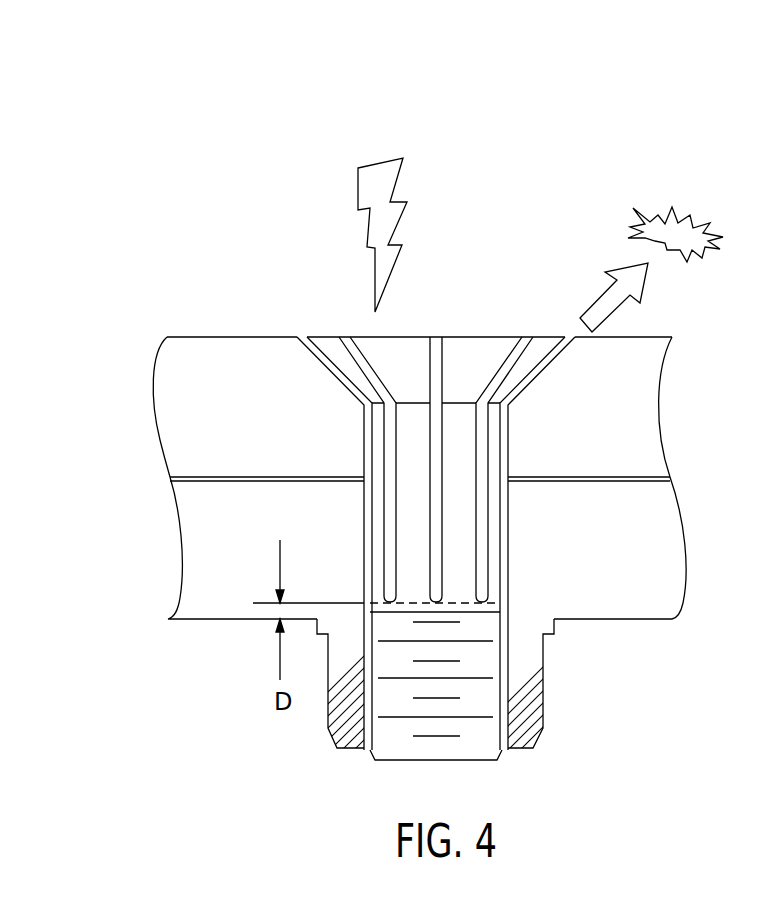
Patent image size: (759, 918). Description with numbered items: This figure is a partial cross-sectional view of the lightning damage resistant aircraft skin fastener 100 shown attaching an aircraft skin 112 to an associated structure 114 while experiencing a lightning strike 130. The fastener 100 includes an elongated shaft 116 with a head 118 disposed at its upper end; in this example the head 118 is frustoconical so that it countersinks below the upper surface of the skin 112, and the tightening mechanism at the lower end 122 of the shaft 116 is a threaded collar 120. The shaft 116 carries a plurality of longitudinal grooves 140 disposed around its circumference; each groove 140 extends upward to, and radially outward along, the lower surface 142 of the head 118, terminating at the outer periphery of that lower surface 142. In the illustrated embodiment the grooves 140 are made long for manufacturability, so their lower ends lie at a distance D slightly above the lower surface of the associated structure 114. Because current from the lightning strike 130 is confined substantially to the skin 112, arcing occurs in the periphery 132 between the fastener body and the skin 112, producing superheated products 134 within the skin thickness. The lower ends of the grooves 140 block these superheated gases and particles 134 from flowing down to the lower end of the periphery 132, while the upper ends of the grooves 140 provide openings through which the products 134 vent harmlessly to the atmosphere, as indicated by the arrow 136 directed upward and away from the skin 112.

The lightning damage resistant aircraft skin fastener 100 is at (600, 178).
The aircraft skin 112 is at (650, 395).
The associated structure 114 is at (670, 557).
The elongated shaft 116 is at (375, 452).
The head 118 is at (305, 337).
The threaded collar 120 is at (533, 675).
The lower end of the shaft 122 is at (487, 730).
The lightning strike 130 is at (358, 192).
The periphery 132 is at (365, 515).
The superheated products 134 is at (700, 218).
The discharge direction 136 is at (597, 298).
The longitudinal grooves 140 is at (435, 572).
The lower surface of the head 142 is at (470, 352).